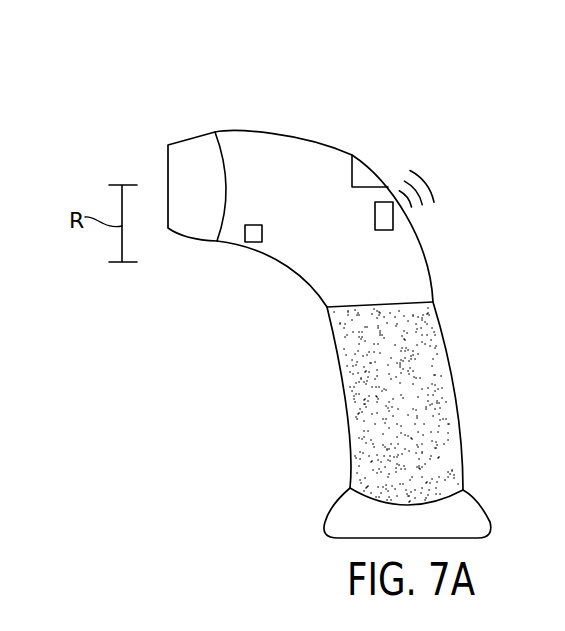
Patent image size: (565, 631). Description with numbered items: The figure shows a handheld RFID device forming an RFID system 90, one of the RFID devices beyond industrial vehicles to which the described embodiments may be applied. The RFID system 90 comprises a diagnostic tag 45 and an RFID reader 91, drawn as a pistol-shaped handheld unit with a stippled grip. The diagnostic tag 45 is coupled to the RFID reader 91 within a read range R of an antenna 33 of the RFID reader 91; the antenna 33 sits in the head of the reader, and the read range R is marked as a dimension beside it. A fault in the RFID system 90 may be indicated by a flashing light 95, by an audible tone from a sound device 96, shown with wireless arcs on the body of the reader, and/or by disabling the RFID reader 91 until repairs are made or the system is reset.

The RFID system 90 is at (330, 110).
The antenna 33 is at (187, 152).
The flashing light 95 is at (362, 173).
The sound device 96 is at (385, 218).
The diagnostic tag 45 is at (250, 242).
The RFID reader 91 is at (447, 388).